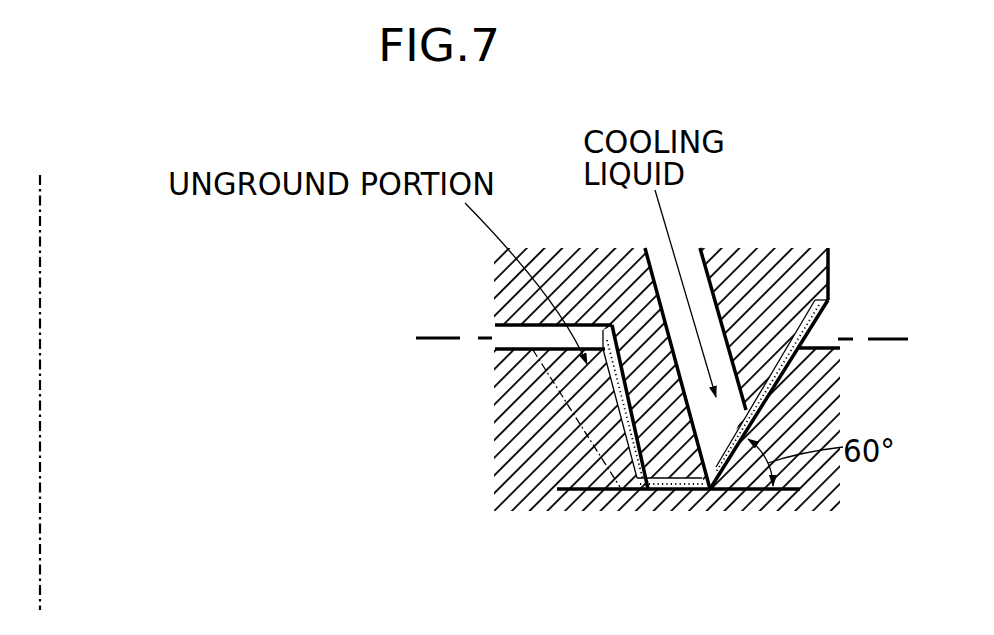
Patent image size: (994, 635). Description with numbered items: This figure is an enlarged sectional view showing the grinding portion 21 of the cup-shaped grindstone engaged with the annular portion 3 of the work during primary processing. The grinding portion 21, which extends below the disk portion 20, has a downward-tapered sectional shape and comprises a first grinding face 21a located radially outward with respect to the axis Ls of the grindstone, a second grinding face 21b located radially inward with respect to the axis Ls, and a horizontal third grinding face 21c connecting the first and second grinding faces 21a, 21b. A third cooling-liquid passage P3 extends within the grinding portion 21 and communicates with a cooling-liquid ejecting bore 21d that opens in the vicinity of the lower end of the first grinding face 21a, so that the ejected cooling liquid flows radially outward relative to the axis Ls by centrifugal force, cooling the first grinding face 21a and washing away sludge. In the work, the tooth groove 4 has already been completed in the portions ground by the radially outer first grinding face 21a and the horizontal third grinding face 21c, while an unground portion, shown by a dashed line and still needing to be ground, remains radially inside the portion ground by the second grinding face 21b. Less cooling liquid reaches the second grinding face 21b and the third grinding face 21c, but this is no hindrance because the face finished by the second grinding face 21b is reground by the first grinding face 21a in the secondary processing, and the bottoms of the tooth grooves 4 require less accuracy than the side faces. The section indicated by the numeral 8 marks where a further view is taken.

The disk portion 20 is at (531, 243).
The grinding portion 21 is at (670, 497).
The first grinding face 21a is at (770, 395).
The second grinding face 21b is at (617, 405).
The third grinding face 21c is at (685, 491).
The cooling-liquid ejecting bore 21d is at (711, 442).
The annular portion 3 is at (831, 344).
The tooth groove 4 is at (781, 373).
The section line 8- 8 is at (432, 334).
The third cooling-liquid passage P3 is at (660, 273).
The axis of the grindstone Ls is at (40, 327).